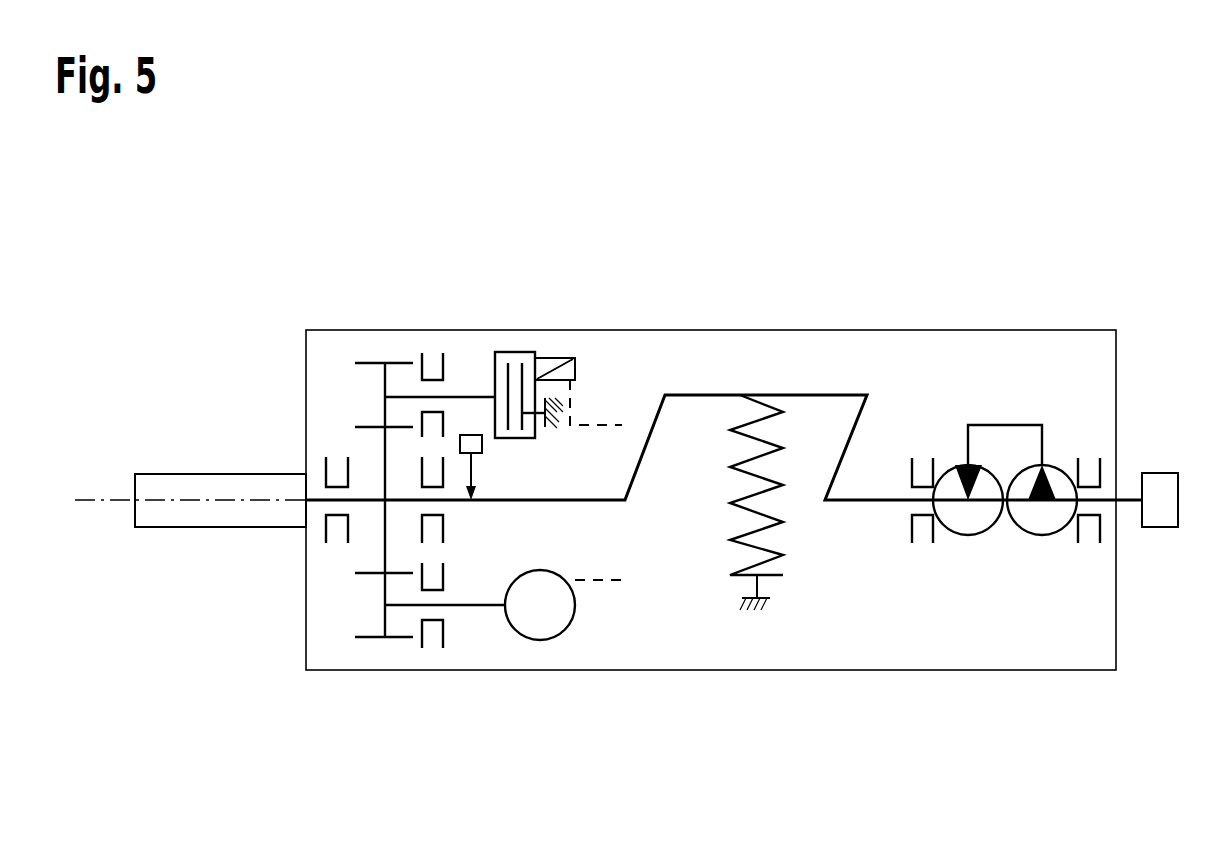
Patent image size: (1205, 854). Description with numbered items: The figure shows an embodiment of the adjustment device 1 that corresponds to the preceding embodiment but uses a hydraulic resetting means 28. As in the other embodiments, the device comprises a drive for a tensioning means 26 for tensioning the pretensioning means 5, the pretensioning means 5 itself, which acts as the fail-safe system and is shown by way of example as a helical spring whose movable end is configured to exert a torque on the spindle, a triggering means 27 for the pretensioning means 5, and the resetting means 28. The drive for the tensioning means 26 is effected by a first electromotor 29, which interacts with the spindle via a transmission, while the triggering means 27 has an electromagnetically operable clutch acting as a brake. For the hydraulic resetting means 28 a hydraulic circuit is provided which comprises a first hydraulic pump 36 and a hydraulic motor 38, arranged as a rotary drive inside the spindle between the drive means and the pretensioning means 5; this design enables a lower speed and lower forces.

The adjustment device 1 is at (1113, 233).
The pretensioning means 5 is at (792, 550).
The tensioning means 26 is at (487, 633).
The triggering means 27 is at (480, 356).
The resetting means 28 is at (1006, 441).
The first electromotor 29 is at (530, 640).
The first hydraulic pump 36 is at (1037, 535).
The hydraulic motor 38 is at (966, 535).